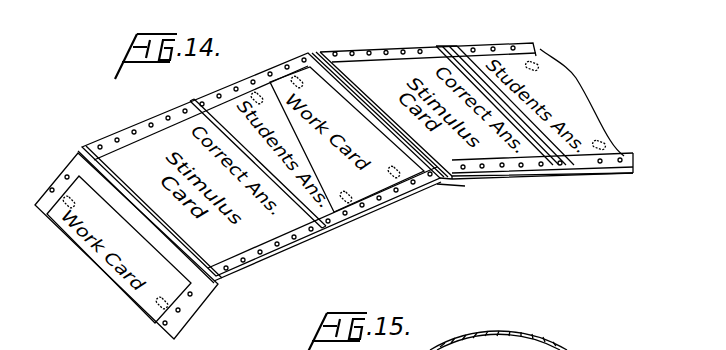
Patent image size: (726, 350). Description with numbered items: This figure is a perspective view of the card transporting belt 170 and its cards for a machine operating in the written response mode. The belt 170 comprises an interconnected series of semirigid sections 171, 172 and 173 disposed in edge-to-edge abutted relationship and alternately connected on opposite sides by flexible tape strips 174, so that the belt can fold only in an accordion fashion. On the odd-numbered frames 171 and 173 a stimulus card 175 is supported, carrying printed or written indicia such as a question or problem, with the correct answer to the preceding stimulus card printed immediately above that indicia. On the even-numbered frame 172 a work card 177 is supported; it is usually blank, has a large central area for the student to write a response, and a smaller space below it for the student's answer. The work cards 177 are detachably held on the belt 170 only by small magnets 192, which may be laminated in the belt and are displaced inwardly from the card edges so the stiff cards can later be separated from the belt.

The card transporting belt 170 is at (428, 202).
The semirigid section 171 is at (543, 177).
The semirigid section 172 is at (404, 204).
The semirigid section 173 is at (290, 248).
The flexible tape strip 174 is at (207, 101).
The stimulus card 175 is at (131, 156).
The work card 177 is at (272, 90).
The magnet 192 is at (547, 62).